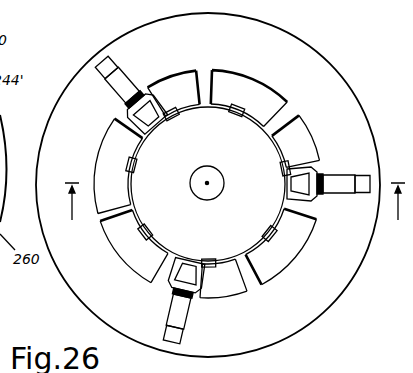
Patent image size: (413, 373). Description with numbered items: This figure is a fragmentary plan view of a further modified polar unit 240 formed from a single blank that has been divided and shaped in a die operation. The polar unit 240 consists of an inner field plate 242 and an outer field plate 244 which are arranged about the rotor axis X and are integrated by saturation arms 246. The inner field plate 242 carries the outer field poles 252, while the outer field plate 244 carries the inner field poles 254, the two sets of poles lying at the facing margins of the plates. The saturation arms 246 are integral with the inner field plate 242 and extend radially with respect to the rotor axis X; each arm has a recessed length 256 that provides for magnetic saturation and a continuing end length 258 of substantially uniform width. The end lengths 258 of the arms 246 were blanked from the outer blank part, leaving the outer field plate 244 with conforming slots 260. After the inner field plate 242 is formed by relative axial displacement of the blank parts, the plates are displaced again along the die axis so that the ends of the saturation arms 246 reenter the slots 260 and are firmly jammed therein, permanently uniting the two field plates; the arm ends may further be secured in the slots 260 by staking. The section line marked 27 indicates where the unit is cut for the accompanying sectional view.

The polar unit 240 is at (208, 185).
The inner field plate 242 is at (219, 118).
The outer field plate 244 is at (335, 95).
The saturation arms 246 is at (329, 182).
The outer field poles 252 is at (284, 166).
The inner field poles 254 is at (272, 136).
The recessed lengths 256 is at (298, 167).
The end lengths 258 is at (343, 183).
The slots 260 is at (365, 193).
The section line 27 is at (234, 211).
The rotor axis X is at (209, 182).